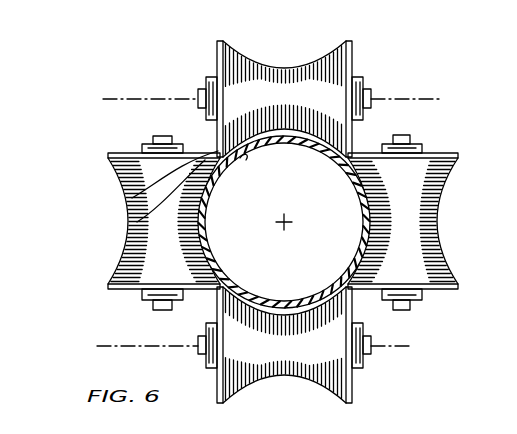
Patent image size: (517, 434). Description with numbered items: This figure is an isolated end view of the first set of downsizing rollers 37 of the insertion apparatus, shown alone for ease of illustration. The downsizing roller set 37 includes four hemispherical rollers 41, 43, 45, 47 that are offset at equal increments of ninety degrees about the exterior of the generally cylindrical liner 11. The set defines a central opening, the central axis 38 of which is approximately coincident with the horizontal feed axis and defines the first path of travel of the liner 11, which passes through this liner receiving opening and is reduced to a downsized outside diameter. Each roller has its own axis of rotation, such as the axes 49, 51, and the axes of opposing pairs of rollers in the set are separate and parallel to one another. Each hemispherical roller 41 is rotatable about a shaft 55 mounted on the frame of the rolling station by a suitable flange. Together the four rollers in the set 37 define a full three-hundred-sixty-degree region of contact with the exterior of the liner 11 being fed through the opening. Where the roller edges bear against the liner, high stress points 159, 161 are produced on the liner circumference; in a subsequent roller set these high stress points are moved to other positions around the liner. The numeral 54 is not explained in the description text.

The liner 11 is at (304, 158).
The set of downsizing rollers 37 is at (378, 45).
The central axis 38 is at (332, 150).
The hemispherical roller 41 is at (414, 213).
The hemispherical roller 43 is at (217, 55).
The hemispherical roller 45 is at (122, 152).
The hemispherical roller 47 is at (353, 375).
The axis of rotation 49 is at (137, 99).
The axis of rotation 51 is at (125, 345).
The contact point 54 is at (244, 157).
The shaft 55 is at (398, 310).
The high stress point 159 is at (132, 198).
The high stress point 161 is at (137, 222).